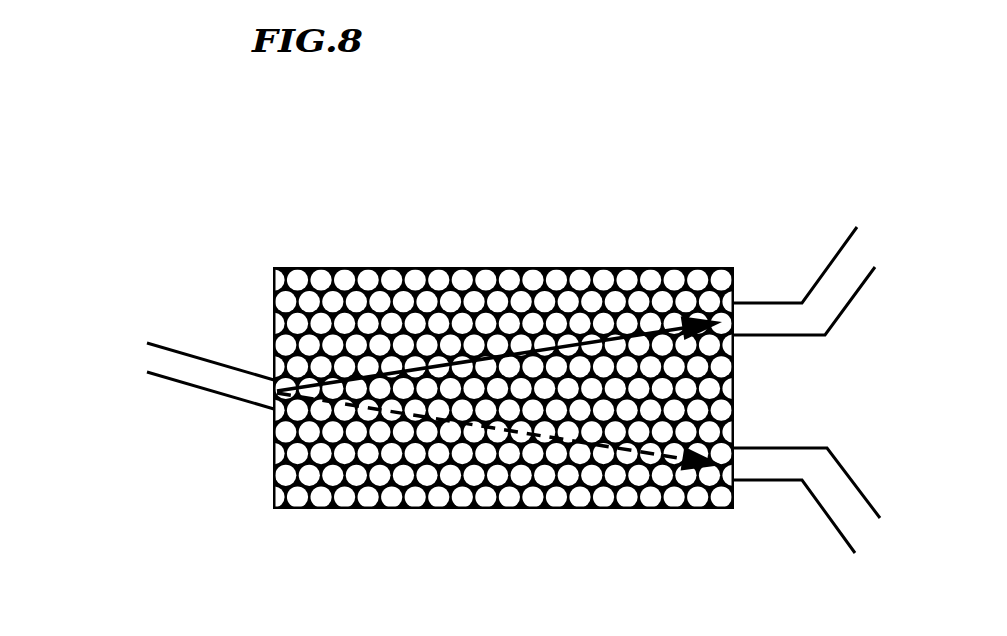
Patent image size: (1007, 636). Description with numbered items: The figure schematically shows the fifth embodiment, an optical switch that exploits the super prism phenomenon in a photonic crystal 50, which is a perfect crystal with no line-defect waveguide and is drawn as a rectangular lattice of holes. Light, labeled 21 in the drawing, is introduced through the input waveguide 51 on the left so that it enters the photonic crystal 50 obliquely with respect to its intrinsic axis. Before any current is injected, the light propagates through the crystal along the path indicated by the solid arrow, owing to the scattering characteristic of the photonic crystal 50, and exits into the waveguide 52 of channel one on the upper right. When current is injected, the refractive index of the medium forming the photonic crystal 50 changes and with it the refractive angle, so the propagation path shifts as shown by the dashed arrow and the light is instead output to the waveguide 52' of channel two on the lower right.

The incident light 21 is at (185, 358).
The photonic crystal 50 is at (512, 268).
The waveguide 51 is at (187, 387).
The waveguide of channel 1 52 is at (804, 253).
The waveguide of channel 2 52' is at (808, 481).